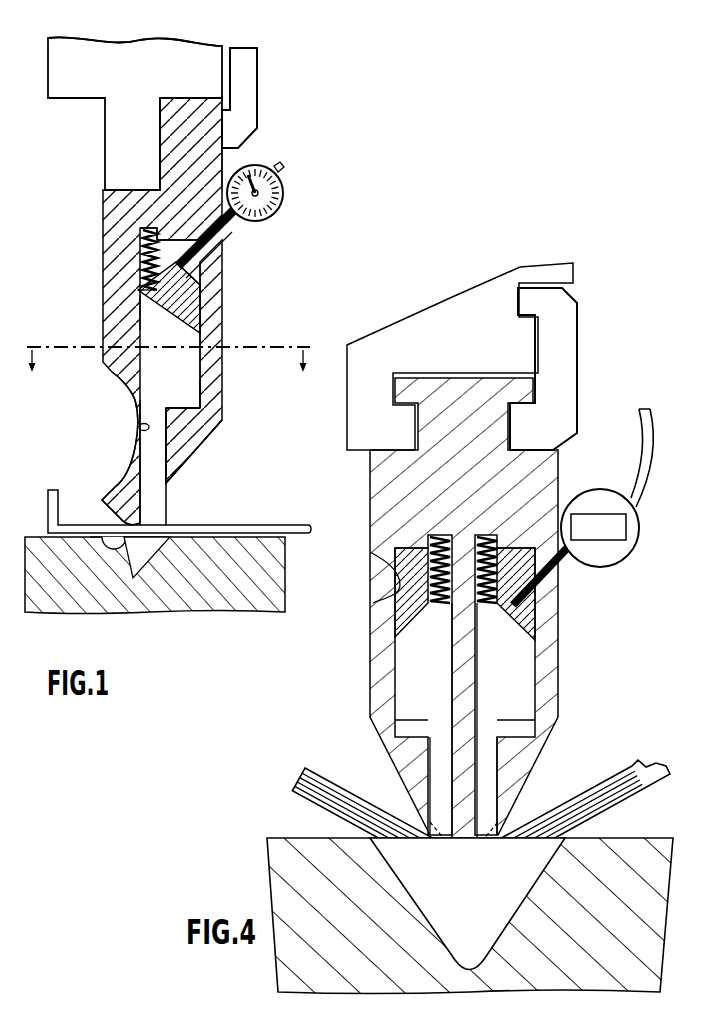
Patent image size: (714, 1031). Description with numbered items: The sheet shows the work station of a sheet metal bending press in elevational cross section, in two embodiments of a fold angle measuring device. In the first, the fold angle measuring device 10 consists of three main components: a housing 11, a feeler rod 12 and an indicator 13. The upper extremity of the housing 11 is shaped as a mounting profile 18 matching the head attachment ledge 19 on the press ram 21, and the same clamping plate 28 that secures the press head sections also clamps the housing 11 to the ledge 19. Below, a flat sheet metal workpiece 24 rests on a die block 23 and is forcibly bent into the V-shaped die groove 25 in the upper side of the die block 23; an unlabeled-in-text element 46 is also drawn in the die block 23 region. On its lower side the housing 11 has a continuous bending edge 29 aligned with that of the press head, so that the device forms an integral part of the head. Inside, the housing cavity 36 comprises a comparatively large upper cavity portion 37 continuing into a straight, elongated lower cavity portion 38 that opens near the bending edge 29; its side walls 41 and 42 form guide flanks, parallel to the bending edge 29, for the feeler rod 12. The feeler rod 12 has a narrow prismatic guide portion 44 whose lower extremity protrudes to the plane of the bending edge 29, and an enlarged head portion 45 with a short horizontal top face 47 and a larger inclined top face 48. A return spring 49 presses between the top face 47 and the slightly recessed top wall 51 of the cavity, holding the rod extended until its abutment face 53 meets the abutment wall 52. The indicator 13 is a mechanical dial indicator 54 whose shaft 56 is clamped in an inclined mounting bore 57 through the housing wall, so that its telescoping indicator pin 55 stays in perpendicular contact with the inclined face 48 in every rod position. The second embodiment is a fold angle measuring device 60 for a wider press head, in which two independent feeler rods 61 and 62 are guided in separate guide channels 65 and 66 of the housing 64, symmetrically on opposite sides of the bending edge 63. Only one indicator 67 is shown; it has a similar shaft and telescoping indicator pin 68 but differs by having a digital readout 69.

In FIG. 1, the fold angle measuring device 10 is at (357, 244).
In FIG. 1, the housing 11 is at (94, 268).
In FIG. 1, the feeler rod 12 is at (177, 500).
In FIG. 1, the indicator 13 is at (313, 185).
In FIG. 1, the mounting profile 18 is at (198, 150).
In FIG. 1, the head attachment ledge 19 is at (95, 136).
In FIG. 1, the press ram 21 is at (142, 32).
In FIG. 1, the die block 23 is at (292, 583).
In FIG. 1, the sheet metal workpiece 24 is at (273, 528).
In FIG. 1, the V-shaped die groove 25 is at (127, 558).
In FIG. 1, the clamping plate 28 is at (243, 76).
In FIG. 1, the bending edge 29 is at (110, 535).
In FIG. 1, the housing cavity 36 is at (195, 308).
In FIG. 1, the upper cavity portion 37 is at (188, 293).
In FIG. 1, the lower cavity portion 38 is at (176, 483).
In FIG. 1, the side wall 41 is at (140, 427).
In FIG. 1, the side wall 42 is at (218, 432).
In FIG. 1, the guide portion 44 is at (150, 470).
In FIG. 1, the head portion 45 is at (185, 358).
In FIG. 1, the slot 46 is at (163, 540).
In FIG. 1, the horizontal top face 47 is at (143, 290).
In FIG. 1, the inclined top face 48 is at (213, 323).
In FIG. 1, the return spring 49 is at (143, 248).
In FIG. 1, the top wall 51 is at (178, 243).
In FIG. 1, the abutment wall 52 is at (173, 403).
In FIG. 1, the abutment face 53 is at (193, 413).
In FIG. 1, the dial indicator 54 is at (283, 184).
In FIG. 1, the indicator pin 55 is at (143, 312).
In FIG. 1, the shaft 56 is at (234, 233).
In FIG. 1, the mounting bore 57 is at (227, 243).
In FIG. 4, the fold angle measuring device 60 is at (334, 678).
In FIG. 4, the feeler rod 61 is at (442, 787).
In FIG. 4, the feeler rod 62 is at (487, 790).
In FIG. 4, the bending edge 63 is at (468, 858).
In FIG. 4, the housing 64 is at (569, 690).
In FIG. 4, the guide channel 65 is at (417, 603).
In FIG. 4, the guide channel 66 is at (525, 622).
In FIG. 4, the indicator 67 is at (606, 460).
In FIG. 4, the indicator pin 68 is at (517, 610).
In FIG. 4, the digital readout 69 is at (603, 537).